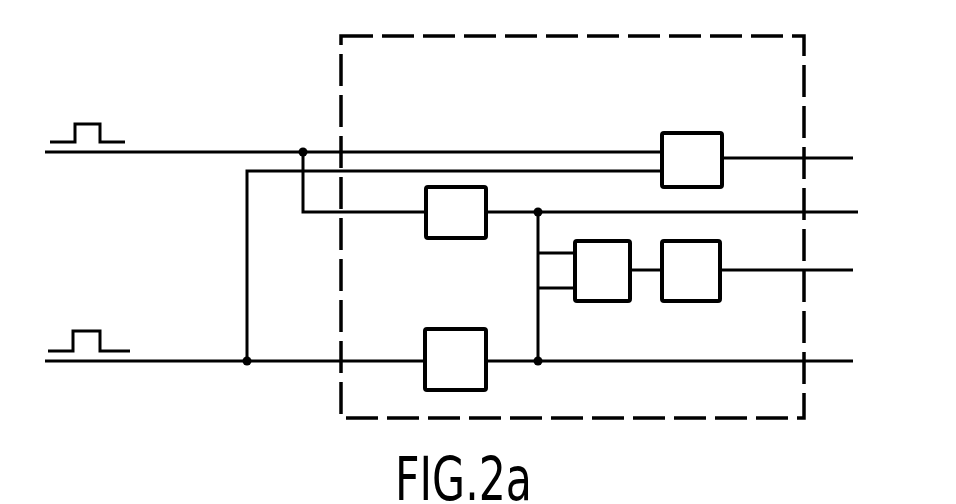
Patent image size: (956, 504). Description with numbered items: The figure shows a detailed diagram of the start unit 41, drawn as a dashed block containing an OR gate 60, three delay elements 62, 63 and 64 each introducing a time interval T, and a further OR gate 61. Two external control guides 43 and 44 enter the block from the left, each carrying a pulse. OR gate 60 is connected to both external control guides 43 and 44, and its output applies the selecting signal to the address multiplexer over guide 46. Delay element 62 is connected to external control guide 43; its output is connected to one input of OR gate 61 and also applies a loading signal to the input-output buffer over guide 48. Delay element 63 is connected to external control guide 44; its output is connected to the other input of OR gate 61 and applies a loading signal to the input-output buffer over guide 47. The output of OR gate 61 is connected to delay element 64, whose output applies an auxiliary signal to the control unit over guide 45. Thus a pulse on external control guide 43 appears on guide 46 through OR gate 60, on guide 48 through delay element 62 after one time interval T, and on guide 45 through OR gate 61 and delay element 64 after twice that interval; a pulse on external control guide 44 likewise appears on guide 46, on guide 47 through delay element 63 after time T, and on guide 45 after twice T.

The start unit 41 is at (557, 12).
The external control guide 43 is at (340, 146).
The external control guide 44 is at (218, 354).
The guide 45 is at (864, 260).
The guide 46 is at (851, 159).
The guide 47 is at (864, 351).
The guide 48 is at (869, 202).
The OR gate 60 is at (671, 134).
The OR gate 61 is at (599, 302).
The delay element 62 is at (424, 226).
The delay element 63 is at (424, 340).
The delay element 64 is at (691, 302).